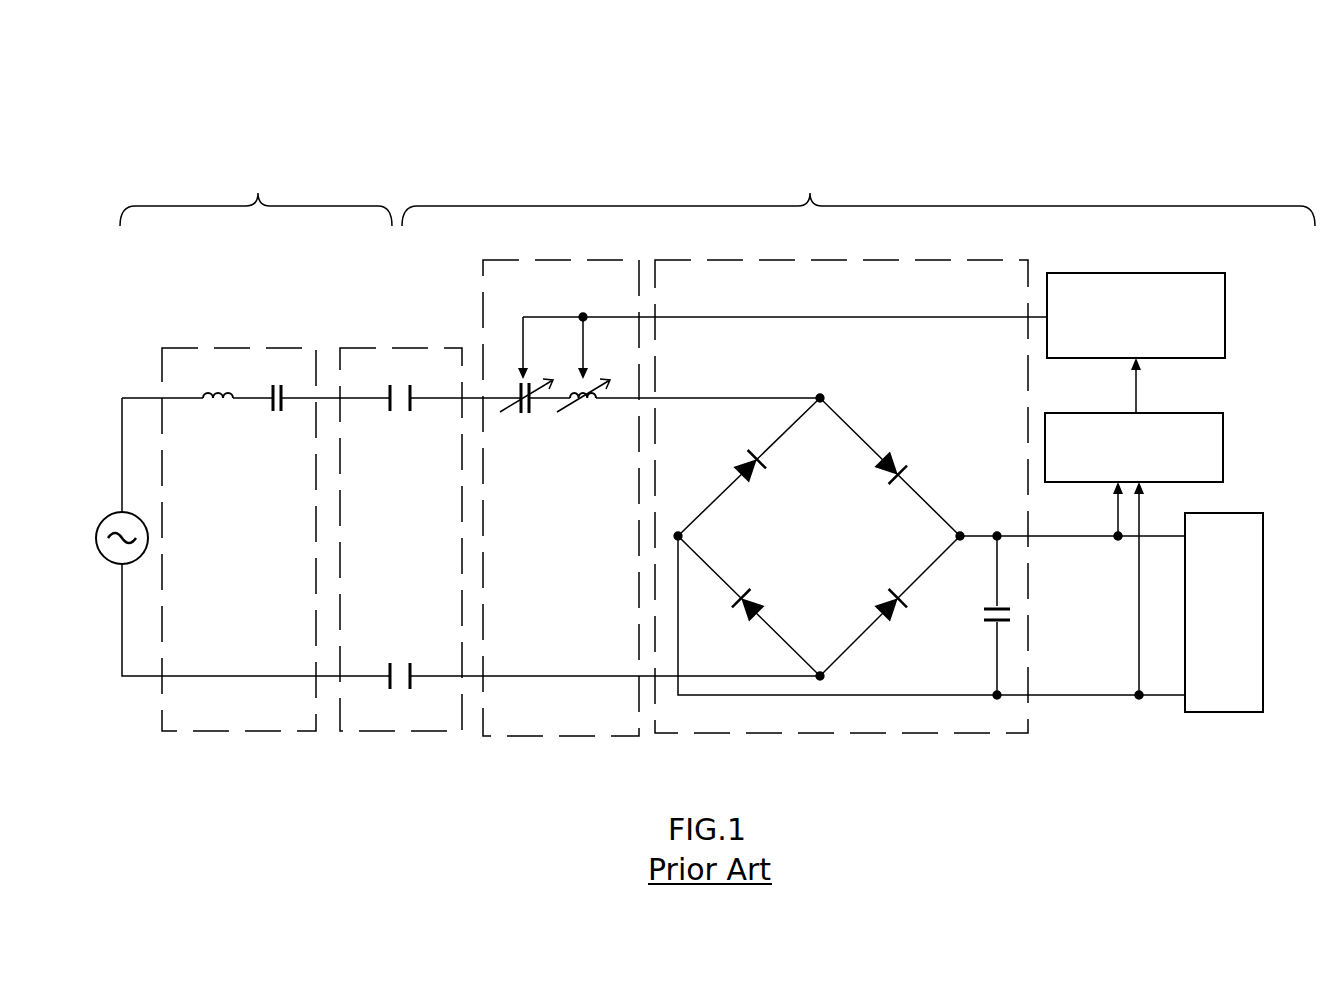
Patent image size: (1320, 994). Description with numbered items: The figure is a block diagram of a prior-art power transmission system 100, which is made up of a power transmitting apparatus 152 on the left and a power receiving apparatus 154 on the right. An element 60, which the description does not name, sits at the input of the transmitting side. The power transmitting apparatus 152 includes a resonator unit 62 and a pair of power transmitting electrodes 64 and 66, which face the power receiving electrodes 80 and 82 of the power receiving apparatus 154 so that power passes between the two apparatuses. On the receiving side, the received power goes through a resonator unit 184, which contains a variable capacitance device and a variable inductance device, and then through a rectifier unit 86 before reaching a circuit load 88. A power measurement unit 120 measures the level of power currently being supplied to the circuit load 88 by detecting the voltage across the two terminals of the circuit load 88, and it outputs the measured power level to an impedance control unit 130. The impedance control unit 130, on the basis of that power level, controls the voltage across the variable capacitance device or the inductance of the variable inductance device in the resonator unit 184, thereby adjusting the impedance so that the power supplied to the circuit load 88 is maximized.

The power transmission system 100 is at (842, 78).
The power transmitting apparatus 152 is at (256, 194).
The power receiving apparatus 154 is at (858, 194).
The RF power source 60 is at (106, 518).
The resonator unit 62 is at (258, 348).
The power transmitting electrode 64 is at (401, 518).
The power receiving electrode 80 is at (365, 348).
The power transmitting electrode 66 is at (409, 701).
The power receiving electrode 82 is at (370, 735).
The resonator unit 184 is at (583, 262).
The rectifier unit 86 is at (972, 262).
The impedance control unit 130 is at (1215, 273).
The power measurement unit 120 is at (1215, 413).
The circuit load 88 is at (1240, 513).